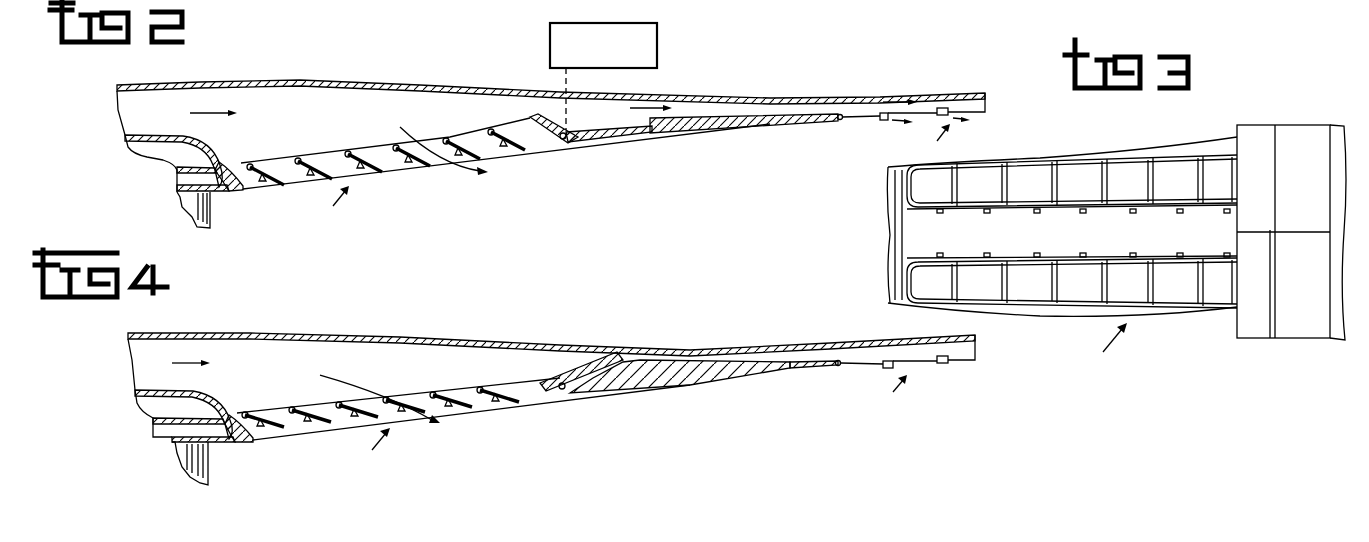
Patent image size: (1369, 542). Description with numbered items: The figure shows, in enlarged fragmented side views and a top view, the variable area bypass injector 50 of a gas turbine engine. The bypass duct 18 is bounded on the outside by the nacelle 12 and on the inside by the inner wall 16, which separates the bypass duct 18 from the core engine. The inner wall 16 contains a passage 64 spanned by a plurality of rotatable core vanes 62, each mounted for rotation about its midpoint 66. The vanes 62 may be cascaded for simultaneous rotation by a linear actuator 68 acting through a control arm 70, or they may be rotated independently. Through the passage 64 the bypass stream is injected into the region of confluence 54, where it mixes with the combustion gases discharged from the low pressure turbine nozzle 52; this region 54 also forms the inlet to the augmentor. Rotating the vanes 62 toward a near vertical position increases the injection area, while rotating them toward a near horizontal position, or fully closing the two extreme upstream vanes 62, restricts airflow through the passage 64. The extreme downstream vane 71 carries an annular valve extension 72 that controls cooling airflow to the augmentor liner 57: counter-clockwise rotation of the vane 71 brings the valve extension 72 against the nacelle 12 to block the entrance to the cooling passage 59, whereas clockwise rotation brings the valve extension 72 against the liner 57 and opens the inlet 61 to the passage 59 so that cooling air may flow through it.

In FIG. 2, the nacelle 12 is at (295, 80).
In FIG. 4, the nacelle 12 is at (303, 332).
In FIG. 2, the inner wall 16 is at (227, 192).
In FIG. 3, the inner wall 16 is at (1162, 322).
In FIG. 4, the inner wall 16 is at (230, 441).
In FIG. 2, the bypass duct 18 is at (152, 121).
In FIG. 4, the bypass duct 18 is at (158, 371).
In FIG. 2, the variable area bypass injector 50 is at (332, 205).
In FIG. 3, the variable area bypass injector 50 is at (1112, 347).
In FIG. 4, the variable area bypass injector 50 is at (375, 449).
In FIG. 2, the low pressure turbine nozzle 52 is at (211, 223).
In FIG. 4, the low pressure turbine nozzle 52 is at (210, 476).
In FIG. 2, the region of confluence 54 is at (556, 193).
In FIG. 4, the region of confluence 54 is at (501, 445).
In FIG. 2, the augmentor liner 57 is at (915, 137).
In FIG. 4, the augmentor liner 57 is at (895, 386).
In FIG. 2, the cooling passage 59 is at (937, 102).
In FIG. 4, the cooling passage 59 is at (913, 348).
In FIG. 2, the inlet 61 is at (588, 122).
In FIG. 4, the inlet 61 is at (557, 356).
In FIG. 2, the rotatable core vanes 62 is at (490, 131).
In FIG. 3, the rotatable core vanes 62 is at (1173, 270).
In FIG. 4, the rotatable core vanes 62 is at (493, 387).
In FIG. 2, the passage 64 is at (400, 172).
In FIG. 3, the passage 64 is at (1013, 297).
In FIG. 4, the passage 64 is at (420, 398).
In FIG. 2, the midpoint 66 is at (304, 163).
In FIG. 3, the midpoint 66 is at (982, 252).
In FIG. 4, the midpoint 66 is at (320, 418).
In FIG. 2, the linear actuator 68 is at (658, 47).
In FIG. 2, the control arm 70 is at (573, 85).
In FIG. 2, the extreme downstream vane 71 is at (540, 117).
In FIG. 3, the extreme downstream vane 71 is at (1252, 244).
In FIG. 4, the extreme downstream vane 71 is at (553, 375).
In FIG. 2, the annular valve extension 72 is at (612, 140).
In FIG. 3, the annular valve extension 72 is at (1300, 136).
In FIG. 4, the annular valve extension 72 is at (598, 357).